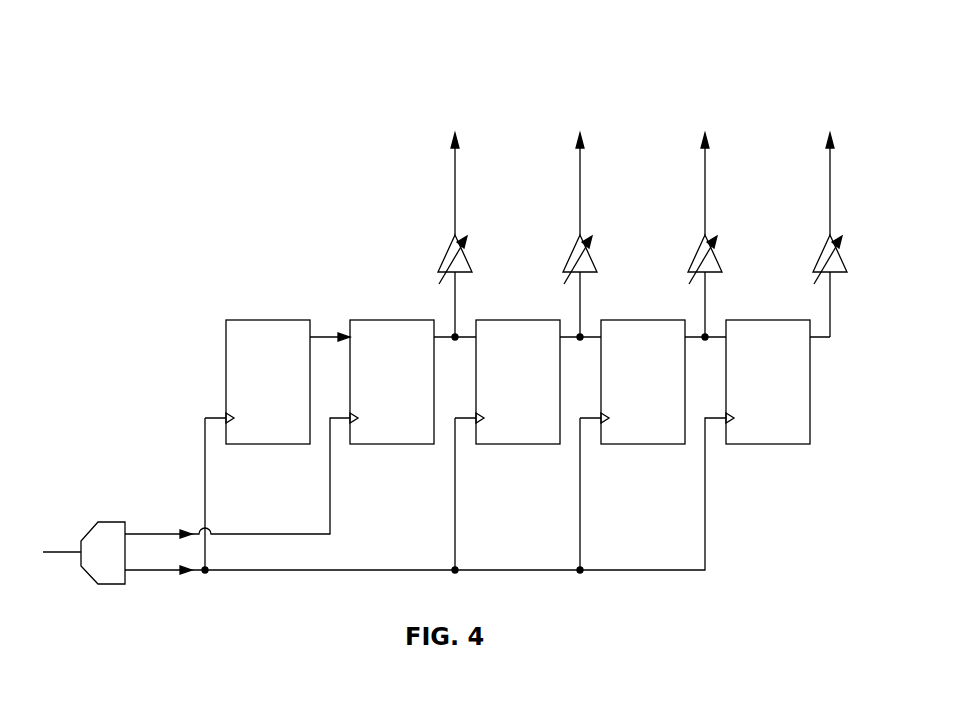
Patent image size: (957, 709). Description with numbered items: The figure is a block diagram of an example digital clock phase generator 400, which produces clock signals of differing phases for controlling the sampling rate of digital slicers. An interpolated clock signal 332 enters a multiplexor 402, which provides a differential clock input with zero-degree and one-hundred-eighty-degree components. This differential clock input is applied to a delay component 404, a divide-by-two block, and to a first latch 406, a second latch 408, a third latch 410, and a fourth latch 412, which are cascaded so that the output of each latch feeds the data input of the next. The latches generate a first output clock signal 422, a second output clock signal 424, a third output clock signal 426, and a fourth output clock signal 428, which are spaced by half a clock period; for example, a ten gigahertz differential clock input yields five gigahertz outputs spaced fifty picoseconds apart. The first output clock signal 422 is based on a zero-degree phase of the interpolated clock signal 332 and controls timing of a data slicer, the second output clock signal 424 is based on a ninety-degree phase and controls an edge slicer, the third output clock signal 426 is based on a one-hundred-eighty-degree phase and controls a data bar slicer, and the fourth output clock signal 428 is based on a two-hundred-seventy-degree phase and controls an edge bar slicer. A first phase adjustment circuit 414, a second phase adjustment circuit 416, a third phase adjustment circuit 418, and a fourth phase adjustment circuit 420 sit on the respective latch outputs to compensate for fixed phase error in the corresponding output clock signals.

The digital clock phase generator 400 is at (222, 98).
The multiplexor 402 is at (113, 520).
The interpolated clock signal 332 is at (55, 553).
The delay component 404 is at (267, 445).
The first latch 406 is at (393, 445).
The second latch 408 is at (518, 445).
The third latch 410 is at (643, 445).
The fourth latch 412 is at (768, 445).
The first phase adjustment circuit 414 is at (447, 257).
The second phase adjustment circuit 416 is at (572, 257).
The third phase adjustment circuit 418 is at (697, 257).
The fourth phase adjustment circuit 420 is at (822, 257).
The first output clock signal 422 is at (452, 181).
The second output clock signal 424 is at (577, 156).
The third output clock signal 426 is at (702, 156).
The fourth output clock signal 428 is at (827, 156).